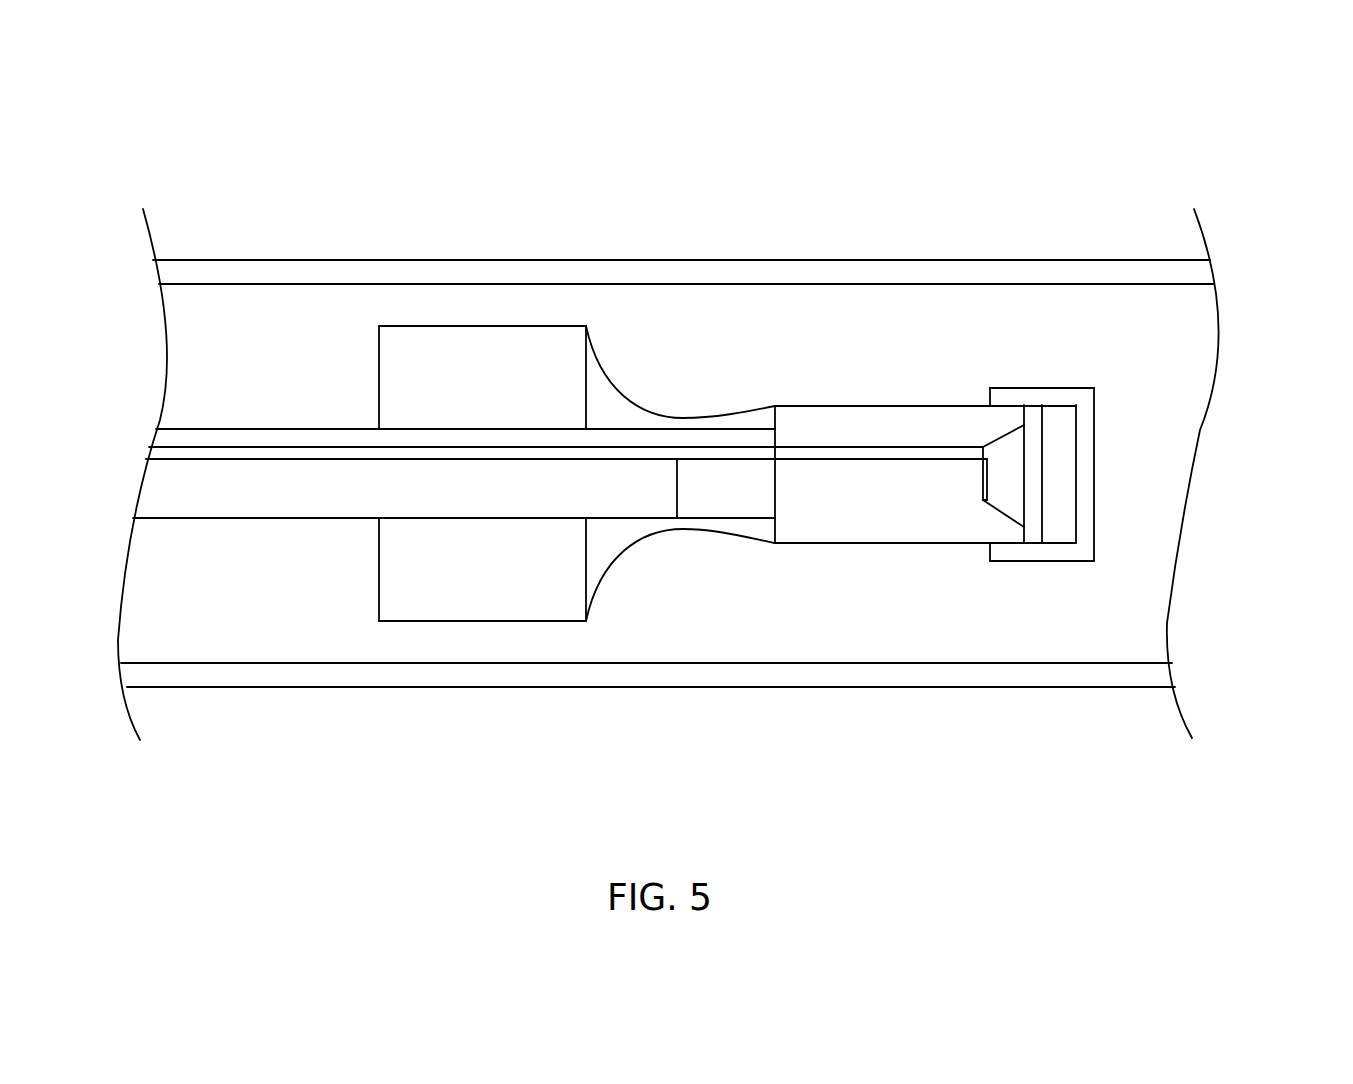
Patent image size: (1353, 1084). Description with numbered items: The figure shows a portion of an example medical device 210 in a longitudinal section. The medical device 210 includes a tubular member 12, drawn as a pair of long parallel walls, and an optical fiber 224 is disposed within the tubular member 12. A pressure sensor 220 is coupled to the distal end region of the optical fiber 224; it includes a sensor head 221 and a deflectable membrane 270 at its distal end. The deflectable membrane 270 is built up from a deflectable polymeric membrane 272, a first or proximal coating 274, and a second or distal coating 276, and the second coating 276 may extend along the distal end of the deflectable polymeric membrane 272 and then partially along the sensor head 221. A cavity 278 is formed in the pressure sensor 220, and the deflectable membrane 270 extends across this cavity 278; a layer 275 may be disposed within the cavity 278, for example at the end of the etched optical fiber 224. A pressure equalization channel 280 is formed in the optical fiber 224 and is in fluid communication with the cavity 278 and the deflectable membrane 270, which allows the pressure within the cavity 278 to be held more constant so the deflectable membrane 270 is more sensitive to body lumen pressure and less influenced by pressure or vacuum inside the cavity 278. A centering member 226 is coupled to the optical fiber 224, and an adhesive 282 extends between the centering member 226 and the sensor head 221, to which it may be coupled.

The medical device 210 is at (349, 138).
The tubular member 12 is at (467, 267).
The optical fiber 224 is at (257, 498).
The centering member 226 is at (468, 603).
The adhesive 282 is at (602, 548).
The pressure equalization channel 280 is at (677, 518).
The pressure sensor 220 is at (890, 375).
The sensor head 221 is at (873, 518).
The layer 275 is at (983, 495).
The cavity 278 is at (1010, 500).
The deflectable membrane 270 is at (1125, 419).
The second coating 276 is at (1044, 392).
The deflectable polymeric membrane 272 is at (1062, 468).
The first coating 274 is at (1033, 523).